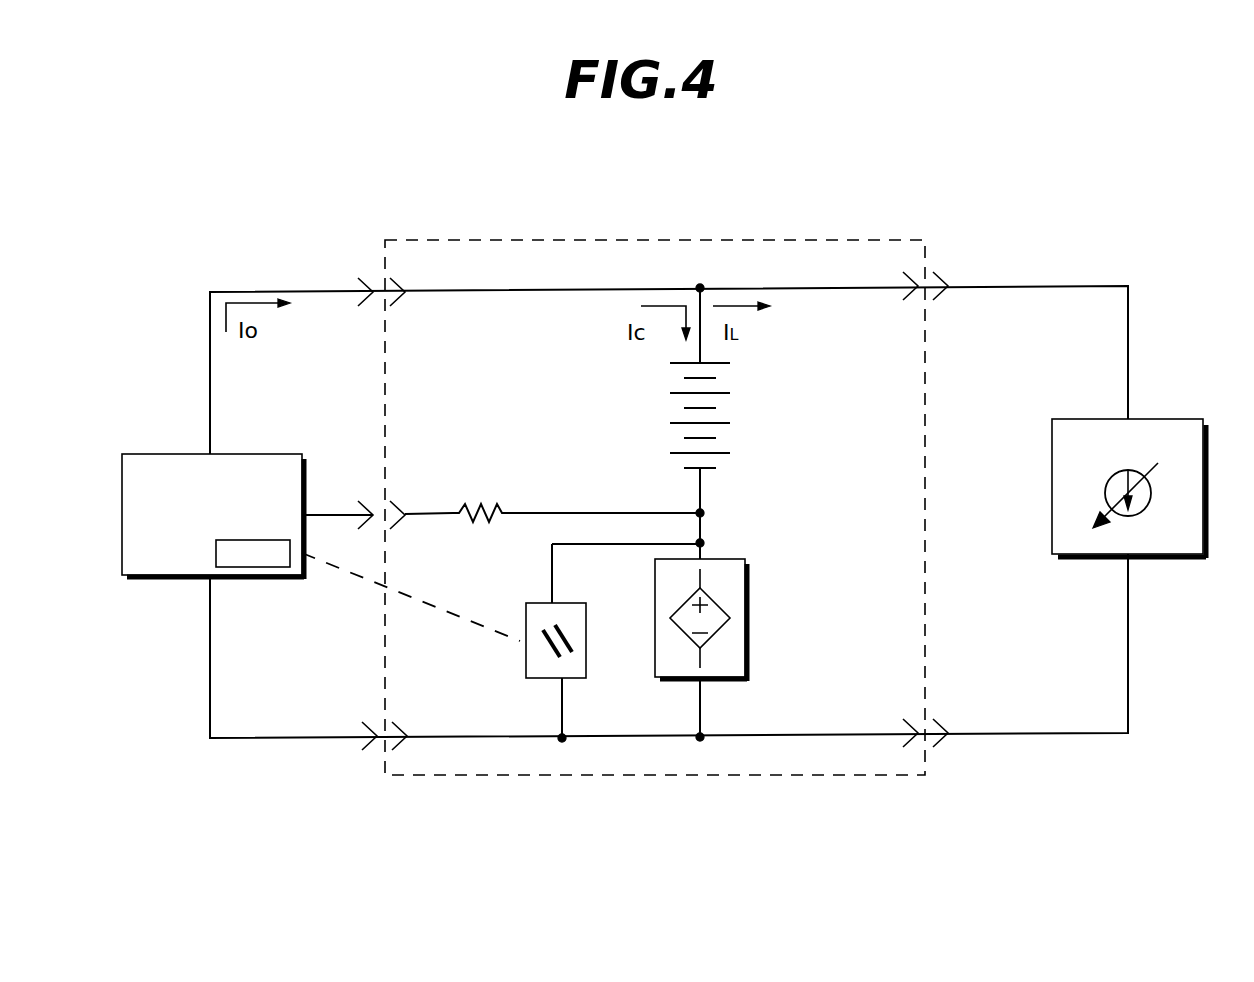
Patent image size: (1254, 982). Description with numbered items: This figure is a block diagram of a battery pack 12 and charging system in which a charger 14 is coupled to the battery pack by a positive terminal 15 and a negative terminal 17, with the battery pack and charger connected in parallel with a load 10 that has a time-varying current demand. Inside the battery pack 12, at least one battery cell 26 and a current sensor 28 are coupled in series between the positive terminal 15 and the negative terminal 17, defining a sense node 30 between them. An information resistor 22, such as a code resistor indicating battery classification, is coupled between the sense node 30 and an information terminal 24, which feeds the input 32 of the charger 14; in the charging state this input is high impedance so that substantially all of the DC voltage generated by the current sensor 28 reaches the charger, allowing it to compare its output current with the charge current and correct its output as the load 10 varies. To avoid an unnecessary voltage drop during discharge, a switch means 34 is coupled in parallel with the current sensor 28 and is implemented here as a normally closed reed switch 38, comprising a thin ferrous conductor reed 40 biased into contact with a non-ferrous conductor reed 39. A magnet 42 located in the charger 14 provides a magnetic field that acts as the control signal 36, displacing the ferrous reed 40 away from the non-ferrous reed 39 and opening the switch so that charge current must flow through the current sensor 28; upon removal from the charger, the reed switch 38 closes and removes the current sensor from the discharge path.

The load 10 is at (1180, 415).
The battery pack 12 is at (760, 242).
The charger 14 is at (165, 452).
The positive terminal 15 is at (373, 278).
The negative terminal 17 is at (372, 748).
The information resistor 22 is at (492, 502).
The information terminal 24 is at (403, 500).
The battery cell 26 is at (735, 415).
The current sensor 28 is at (748, 624).
The sense node 30 is at (706, 540).
The input 32 is at (312, 507).
The switch means 34 is at (526, 669).
The control signal 36 is at (427, 600).
The normally closed reed switch 38 is at (559, 622).
The non-ferrous conductor reed 39 is at (570, 640).
The ferrous conductor reed 40 is at (552, 652).
The magnet 42 is at (257, 567).